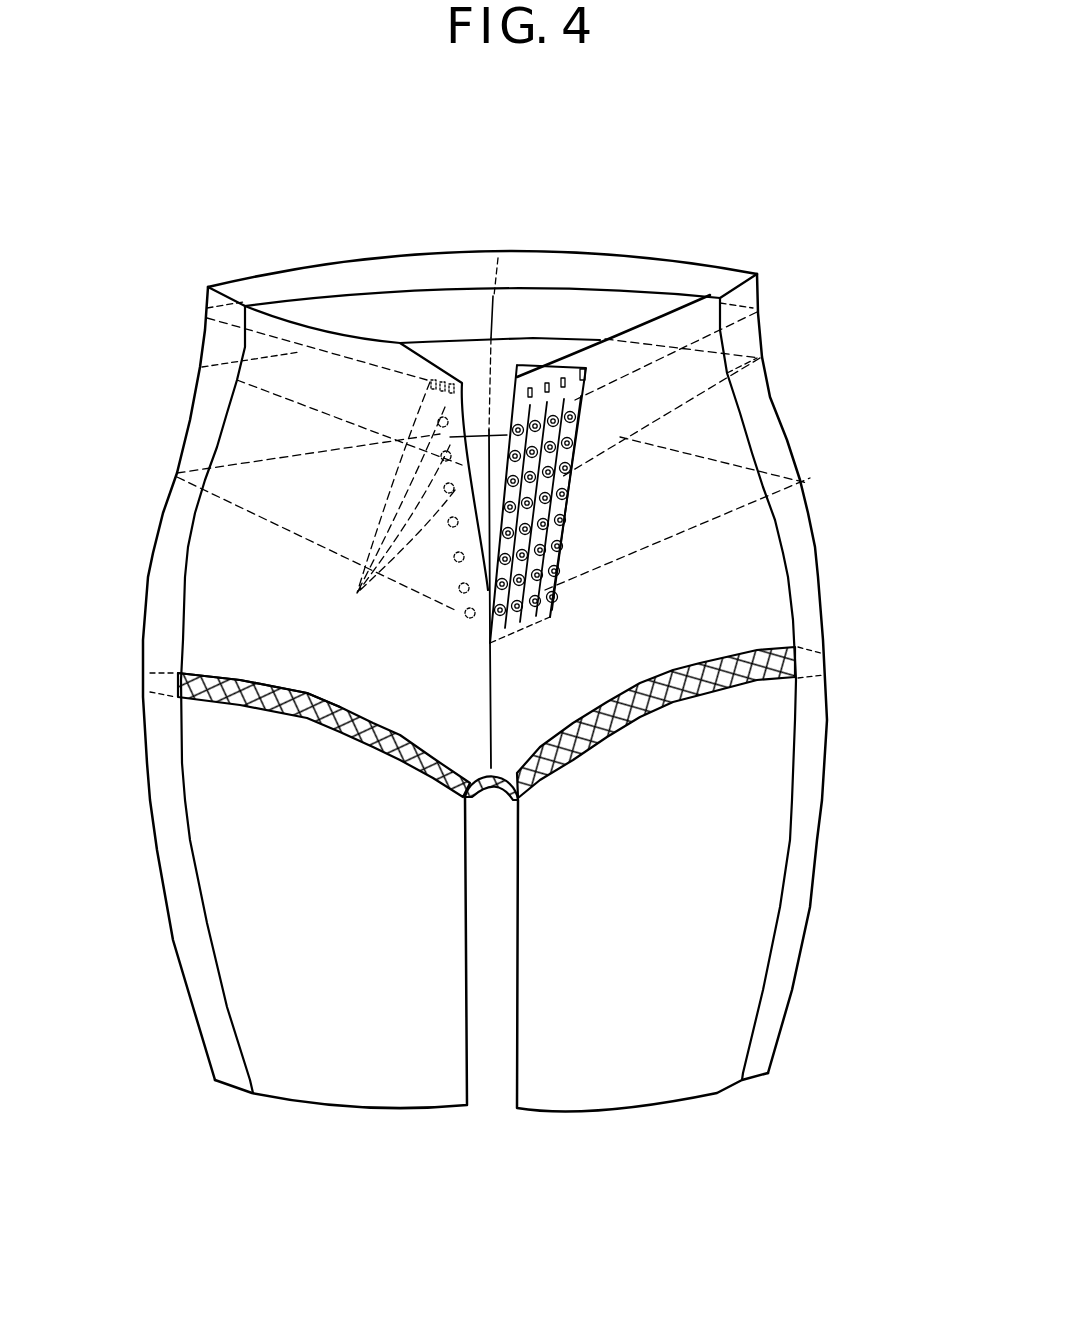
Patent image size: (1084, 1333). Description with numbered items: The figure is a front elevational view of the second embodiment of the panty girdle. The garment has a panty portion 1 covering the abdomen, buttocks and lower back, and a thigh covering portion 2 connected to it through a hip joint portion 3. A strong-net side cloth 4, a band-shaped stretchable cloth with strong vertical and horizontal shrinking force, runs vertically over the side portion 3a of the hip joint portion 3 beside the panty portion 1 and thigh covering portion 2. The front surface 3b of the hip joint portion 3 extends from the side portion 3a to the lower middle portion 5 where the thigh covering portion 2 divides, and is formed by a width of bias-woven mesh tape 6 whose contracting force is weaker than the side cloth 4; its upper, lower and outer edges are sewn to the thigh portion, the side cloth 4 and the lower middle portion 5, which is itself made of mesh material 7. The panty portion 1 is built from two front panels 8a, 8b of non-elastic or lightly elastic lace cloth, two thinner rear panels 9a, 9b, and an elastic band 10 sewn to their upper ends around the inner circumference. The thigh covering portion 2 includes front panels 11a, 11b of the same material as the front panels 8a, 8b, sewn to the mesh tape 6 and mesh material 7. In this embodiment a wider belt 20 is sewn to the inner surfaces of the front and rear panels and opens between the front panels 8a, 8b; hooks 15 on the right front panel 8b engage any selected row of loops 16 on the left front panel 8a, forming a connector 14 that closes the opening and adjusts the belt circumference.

The panty portion 1 is at (858, 637).
The thigh covering portion 2 is at (858, 1067).
The hip joint portion 3 is at (858, 650).
The side portion of the hip joint portion 3a is at (143, 692).
The front surface of the hip joint portion 3b is at (323, 727).
The strong-net side cloth 4 is at (147, 577).
The lower middle portion 5 is at (500, 803).
The mesh tape 6 is at (230, 702).
The mesh material 7 is at (480, 800).
The left front panel 8a is at (755, 602).
The right front panel 8b is at (203, 627).
The rear panel 9a is at (612, 312).
The rear panel 9b is at (388, 313).
The elastic band 10 is at (534, 270).
The front panel of thigh covering portion 11a is at (645, 1067).
The front panel of thigh covering portion 11b is at (343, 1077).
The connector 14 is at (527, 632).
The hooks 15 is at (352, 593).
The loops 16 is at (585, 372).
The belt 20 is at (547, 335).